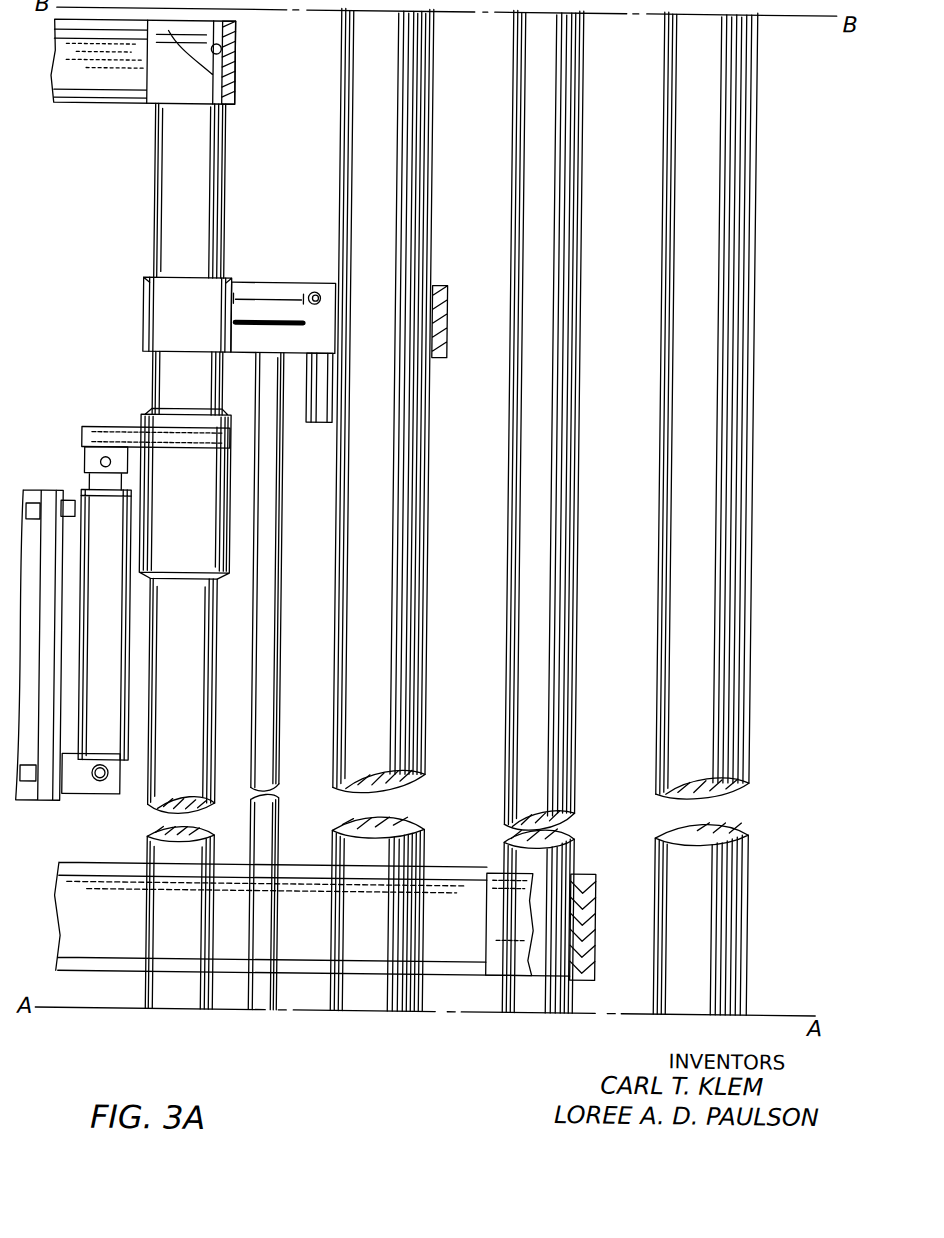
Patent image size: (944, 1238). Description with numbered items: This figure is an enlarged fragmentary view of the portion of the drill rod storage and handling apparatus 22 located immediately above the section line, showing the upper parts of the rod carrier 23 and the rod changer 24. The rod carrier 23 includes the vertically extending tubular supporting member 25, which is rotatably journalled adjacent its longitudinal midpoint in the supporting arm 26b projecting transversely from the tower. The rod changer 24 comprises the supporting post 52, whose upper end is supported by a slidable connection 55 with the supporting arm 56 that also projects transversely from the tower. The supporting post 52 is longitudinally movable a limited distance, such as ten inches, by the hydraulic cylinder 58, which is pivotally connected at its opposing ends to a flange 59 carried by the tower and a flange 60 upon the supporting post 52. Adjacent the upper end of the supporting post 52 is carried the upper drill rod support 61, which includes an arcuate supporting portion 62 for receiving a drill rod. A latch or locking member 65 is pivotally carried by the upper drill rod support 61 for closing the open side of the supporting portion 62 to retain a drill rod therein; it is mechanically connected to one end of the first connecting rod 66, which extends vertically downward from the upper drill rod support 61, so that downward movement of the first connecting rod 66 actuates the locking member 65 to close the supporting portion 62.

The drill rod storage and handling apparatus 22 is at (379, 1077).
The drill rod carrier or rack 23 is at (531, 1035).
The drill rod changer 24 is at (218, 1031).
The tubular supporting member 25 is at (548, 278).
The supporting arm 26b is at (132, 943).
The supporting post 52 is at (180, 208).
The slidable connection 55 is at (222, 54).
The supporting arm 56 is at (87, 76).
The hydraulic cylinder 58 is at (100, 512).
The flange 59 is at (87, 800).
The flange 60 is at (106, 434).
The upper drill rod support 61 is at (178, 318).
The arcuate supporting portion 62 is at (272, 298).
The latch or locking member 65 is at (312, 425).
The first connecting rod 66 is at (270, 639).